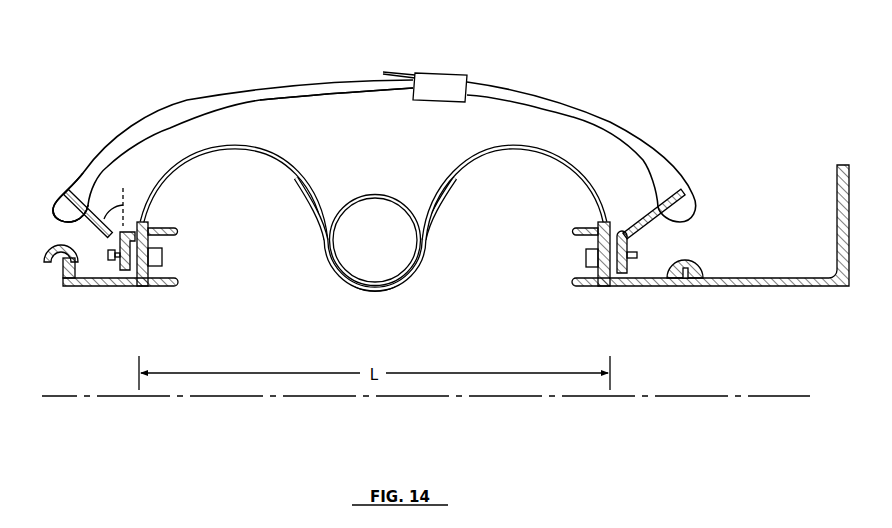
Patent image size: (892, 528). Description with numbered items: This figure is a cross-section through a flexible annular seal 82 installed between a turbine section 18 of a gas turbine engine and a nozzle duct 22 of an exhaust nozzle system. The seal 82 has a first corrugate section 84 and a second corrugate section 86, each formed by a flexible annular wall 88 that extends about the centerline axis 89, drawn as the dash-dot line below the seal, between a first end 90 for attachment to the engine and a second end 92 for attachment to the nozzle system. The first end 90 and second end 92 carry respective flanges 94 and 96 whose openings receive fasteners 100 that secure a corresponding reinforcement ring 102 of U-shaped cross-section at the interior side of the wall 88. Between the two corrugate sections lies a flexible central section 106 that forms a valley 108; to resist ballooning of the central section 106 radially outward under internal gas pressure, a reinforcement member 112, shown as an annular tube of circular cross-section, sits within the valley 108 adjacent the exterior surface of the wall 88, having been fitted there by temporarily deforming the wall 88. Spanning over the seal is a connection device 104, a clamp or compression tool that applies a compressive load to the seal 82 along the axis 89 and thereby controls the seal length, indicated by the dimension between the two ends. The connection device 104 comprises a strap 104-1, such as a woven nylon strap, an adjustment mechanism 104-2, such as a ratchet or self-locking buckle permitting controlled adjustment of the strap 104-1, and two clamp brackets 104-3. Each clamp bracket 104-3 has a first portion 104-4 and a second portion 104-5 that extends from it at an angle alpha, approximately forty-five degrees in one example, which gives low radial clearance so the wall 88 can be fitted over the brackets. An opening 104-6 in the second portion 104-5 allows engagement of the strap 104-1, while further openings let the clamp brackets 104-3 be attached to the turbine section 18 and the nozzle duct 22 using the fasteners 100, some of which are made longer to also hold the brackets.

The connection device 104 is at (575, 102).
The strap 104-1 is at (209, 96).
The adjustment mechanism 104-2 is at (446, 74).
The clamp bracket 104-3 is at (93, 228).
The first portion 104-4 is at (118, 272).
The second portion 104-5 is at (70, 215).
The opening 104-6 is at (83, 215).
The first end 90 is at (141, 222).
The second end 92 is at (598, 220).
The first corrugate section 84 is at (232, 147).
The second corrugate section 86 is at (507, 147).
The flexible annular wall 88 is at (312, 199).
The flexible annular seal 82 is at (434, 219).
The reinforcement member 112 is at (375, 190).
The valley 108 is at (400, 287).
The central section 106 is at (379, 293).
The fastener 100 is at (165, 258).
The turbine section 18 is at (70, 287).
The flange 94 is at (142, 288).
The reinforcement ring 102 is at (164, 288).
The flange 96 is at (615, 288).
The nozzle duct 22 is at (733, 288).
The centerline axis 89 is at (592, 398).